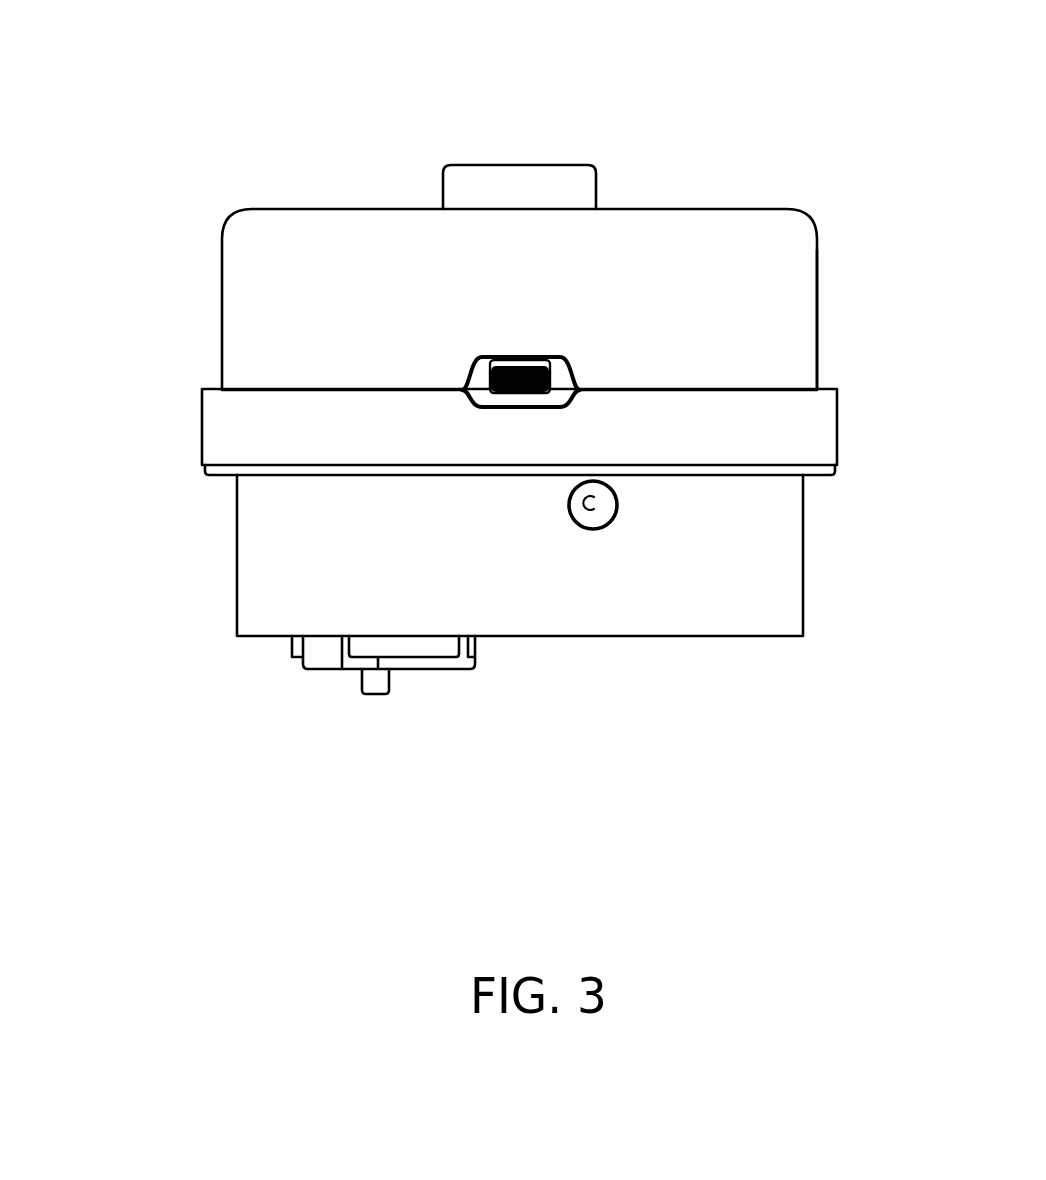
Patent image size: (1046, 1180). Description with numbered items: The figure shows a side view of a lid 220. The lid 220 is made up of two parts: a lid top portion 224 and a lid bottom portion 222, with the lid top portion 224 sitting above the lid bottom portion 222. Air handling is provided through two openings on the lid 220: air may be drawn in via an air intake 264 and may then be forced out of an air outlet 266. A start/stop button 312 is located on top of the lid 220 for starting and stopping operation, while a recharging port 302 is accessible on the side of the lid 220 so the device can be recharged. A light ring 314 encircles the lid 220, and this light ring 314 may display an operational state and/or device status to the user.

The lid 220 is at (222, 238).
The lid bottom portion 222 is at (803, 544).
The lid top portion 224 is at (817, 288).
The air intake 264 is at (608, 527).
The air outlet 266 is at (390, 686).
The recharging port 302 is at (545, 372).
The start/stop button 312 is at (484, 164).
The light ring 314 is at (202, 428).